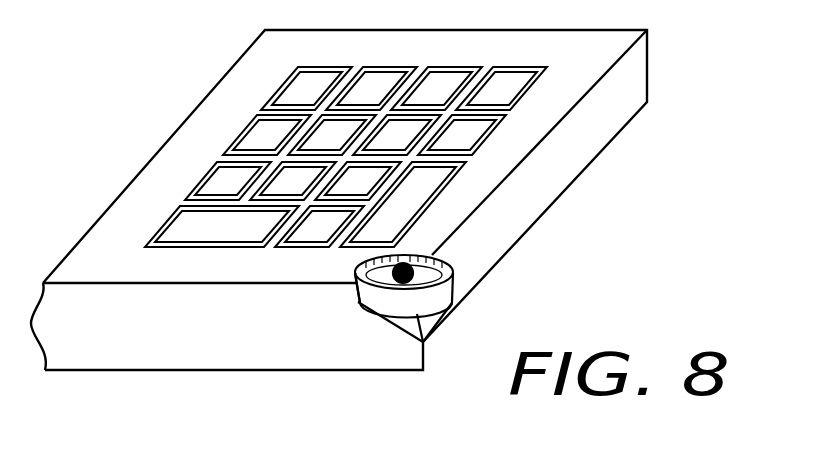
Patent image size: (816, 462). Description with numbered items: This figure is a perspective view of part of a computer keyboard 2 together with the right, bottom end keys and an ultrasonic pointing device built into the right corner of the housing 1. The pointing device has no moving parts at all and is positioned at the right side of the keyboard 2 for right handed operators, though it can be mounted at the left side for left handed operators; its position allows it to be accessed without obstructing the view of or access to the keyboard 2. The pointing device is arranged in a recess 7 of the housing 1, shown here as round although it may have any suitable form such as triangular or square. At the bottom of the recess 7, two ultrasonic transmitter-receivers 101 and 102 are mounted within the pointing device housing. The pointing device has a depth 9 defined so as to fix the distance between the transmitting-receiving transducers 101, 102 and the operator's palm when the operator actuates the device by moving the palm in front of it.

The housing 1 is at (470, 198).
The keyboard 2 is at (277, 135).
The recess 7 is at (434, 276).
The depth 9 is at (358, 282).
The ultrasonic transmitter-receiver 101 is at (405, 252).
The ultrasonic transmitter-receiver 102 is at (445, 280).